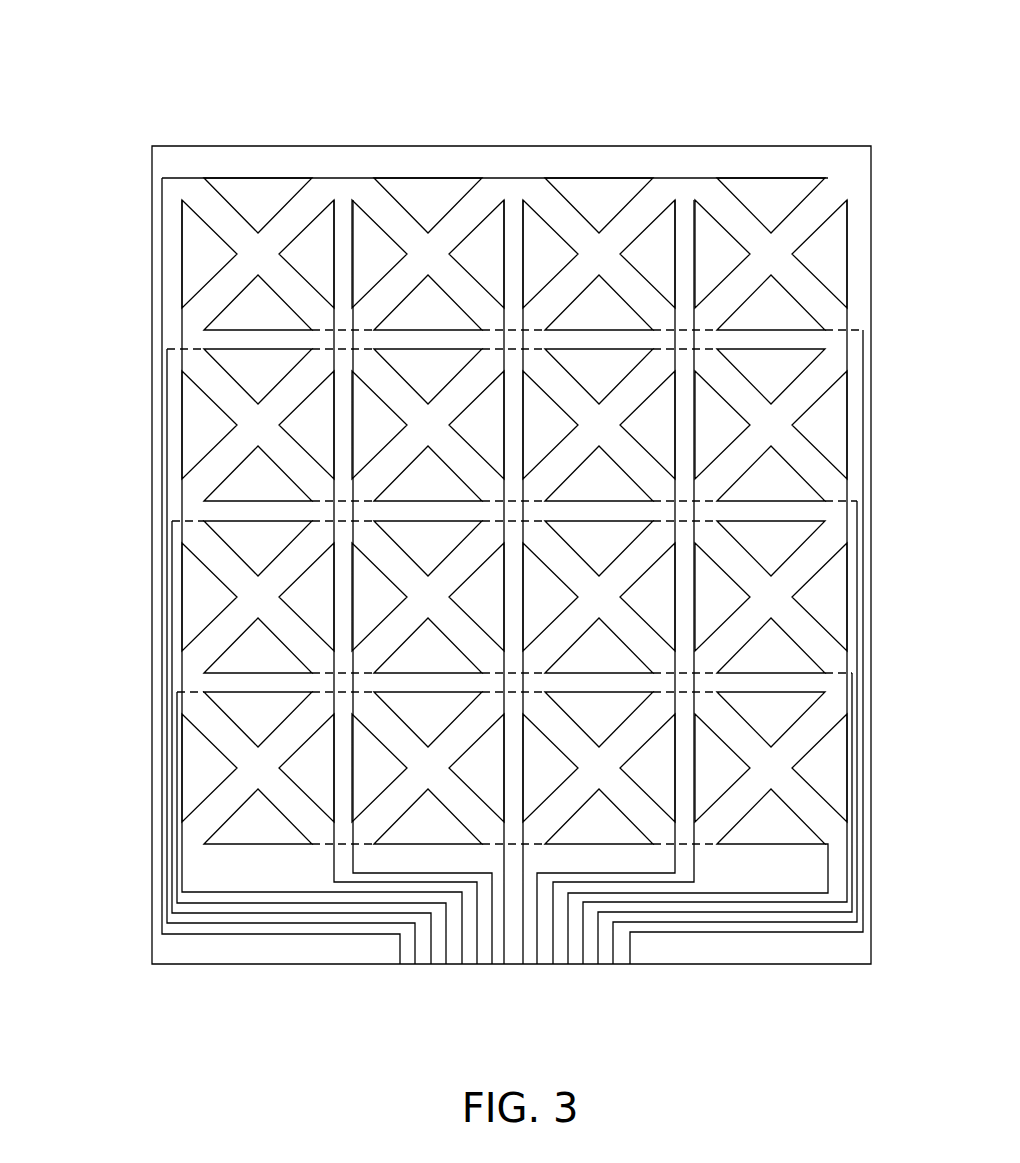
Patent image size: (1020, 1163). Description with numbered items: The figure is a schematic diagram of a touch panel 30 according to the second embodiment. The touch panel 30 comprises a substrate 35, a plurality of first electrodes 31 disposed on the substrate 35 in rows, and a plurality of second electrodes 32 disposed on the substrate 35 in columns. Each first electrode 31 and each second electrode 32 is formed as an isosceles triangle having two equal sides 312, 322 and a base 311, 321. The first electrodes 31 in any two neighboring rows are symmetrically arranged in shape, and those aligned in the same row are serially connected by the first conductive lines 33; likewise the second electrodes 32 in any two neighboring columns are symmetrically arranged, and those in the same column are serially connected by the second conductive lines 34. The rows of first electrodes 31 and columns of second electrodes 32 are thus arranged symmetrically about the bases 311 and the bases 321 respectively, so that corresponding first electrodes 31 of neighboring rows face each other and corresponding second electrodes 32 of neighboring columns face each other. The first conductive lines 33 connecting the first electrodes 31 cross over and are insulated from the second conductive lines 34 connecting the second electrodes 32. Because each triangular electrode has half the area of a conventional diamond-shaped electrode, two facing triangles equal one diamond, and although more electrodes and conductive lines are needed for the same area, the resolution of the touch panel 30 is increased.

The touch panel 30 is at (451, 516).
The first electrode 31 is at (447, 571).
The base 311 is at (257, 330).
The equal side 312 is at (313, 260).
The second electrode 32 is at (495, 362).
The base 321 is at (337, 245).
The equal side 322 is at (313, 250).
The first conductive line 33 is at (367, 328).
The second conductive line 34 is at (335, 357).
The substrate 35 is at (833, 157).